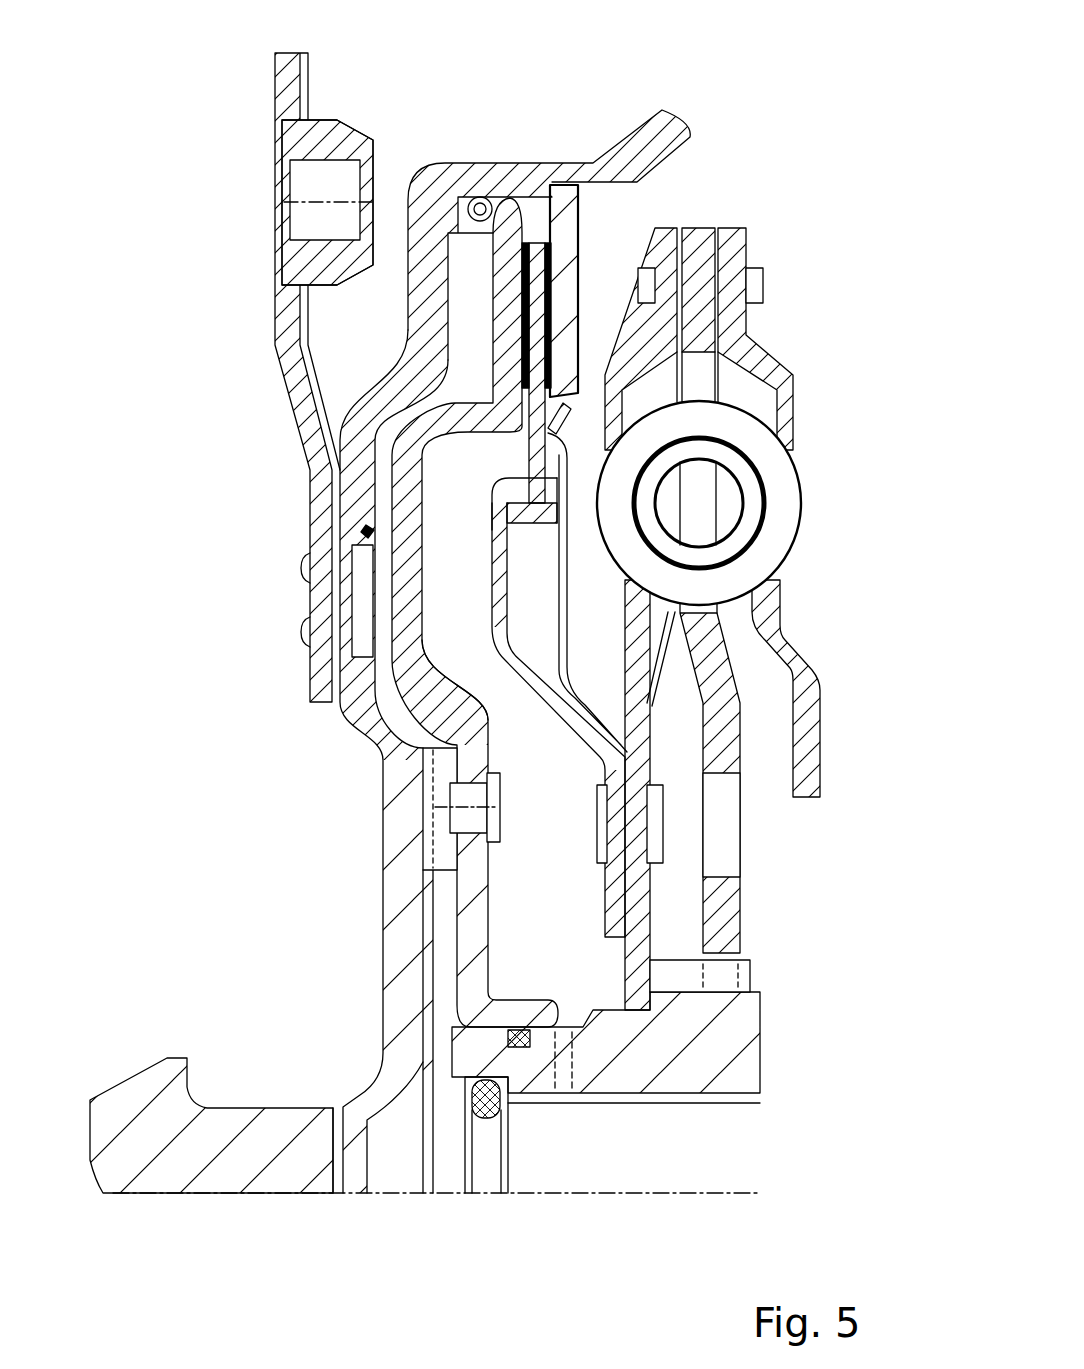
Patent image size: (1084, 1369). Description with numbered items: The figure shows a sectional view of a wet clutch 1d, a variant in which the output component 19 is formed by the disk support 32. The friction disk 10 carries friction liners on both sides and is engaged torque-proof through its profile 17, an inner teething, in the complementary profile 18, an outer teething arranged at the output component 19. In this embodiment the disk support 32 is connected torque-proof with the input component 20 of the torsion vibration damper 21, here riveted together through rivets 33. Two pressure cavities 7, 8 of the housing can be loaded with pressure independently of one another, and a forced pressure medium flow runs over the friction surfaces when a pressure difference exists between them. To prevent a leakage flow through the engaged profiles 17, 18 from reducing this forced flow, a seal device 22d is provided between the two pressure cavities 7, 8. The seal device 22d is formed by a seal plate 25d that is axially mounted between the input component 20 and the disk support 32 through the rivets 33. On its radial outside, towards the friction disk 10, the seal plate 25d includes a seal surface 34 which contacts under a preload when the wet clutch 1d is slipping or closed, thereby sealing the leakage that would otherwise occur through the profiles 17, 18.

The wet clutch 1d is at (463, 118).
The friction disk 10 is at (566, 250).
The torsion vibration damper 21 is at (783, 340).
The pressure cavity 8 is at (616, 338).
The seal surface 34 is at (567, 425).
The seal plate 25d is at (568, 527).
The profile 17 is at (527, 473).
The complementary profile 18 is at (510, 498).
The pressure cavity 7 is at (462, 568).
The seal device 22d is at (547, 597).
The output component 19 is at (500, 665).
The disk support 32 is at (557, 700).
The input component 20 is at (638, 745).
The rivets 33 is at (663, 823).